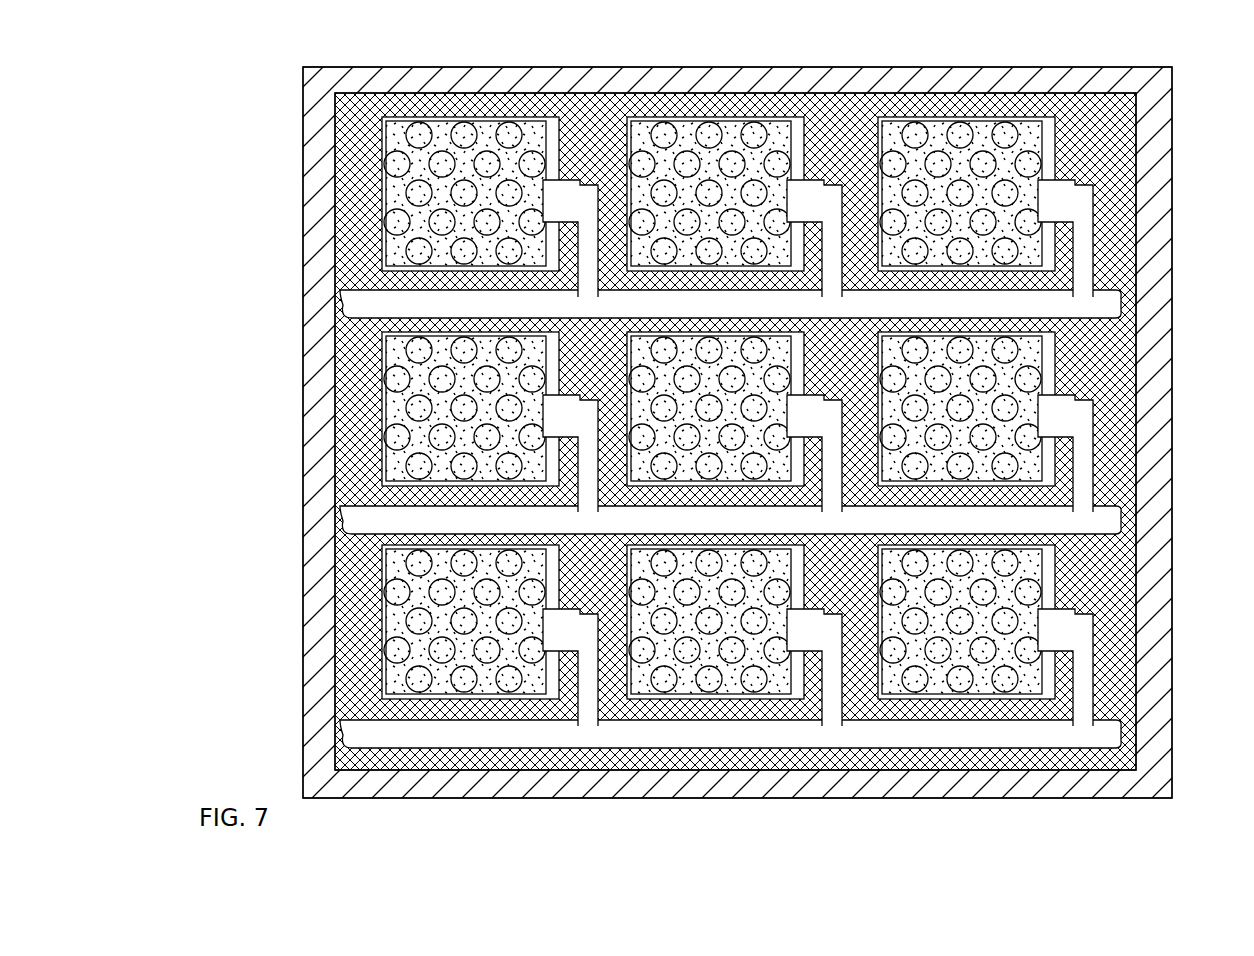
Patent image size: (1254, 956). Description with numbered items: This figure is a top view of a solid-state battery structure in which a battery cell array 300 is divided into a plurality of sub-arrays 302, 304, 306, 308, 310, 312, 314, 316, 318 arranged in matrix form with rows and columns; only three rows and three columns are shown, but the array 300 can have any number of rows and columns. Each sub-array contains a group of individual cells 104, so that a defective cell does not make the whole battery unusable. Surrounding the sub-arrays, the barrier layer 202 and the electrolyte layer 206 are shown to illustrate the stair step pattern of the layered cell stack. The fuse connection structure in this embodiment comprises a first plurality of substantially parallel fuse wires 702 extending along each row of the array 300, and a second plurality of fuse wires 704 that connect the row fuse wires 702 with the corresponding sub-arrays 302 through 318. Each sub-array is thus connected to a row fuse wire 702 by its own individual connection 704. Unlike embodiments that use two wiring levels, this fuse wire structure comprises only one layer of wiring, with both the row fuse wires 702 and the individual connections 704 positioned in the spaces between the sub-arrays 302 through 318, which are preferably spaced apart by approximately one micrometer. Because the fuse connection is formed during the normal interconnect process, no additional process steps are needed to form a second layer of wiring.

The battery cell array 300 is at (275, 93).
The barrier layer 202 is at (1158, 97).
The electrolyte layer 206 is at (1119, 157).
The cells 104 is at (400, 355).
The sub-array 302 is at (980, 690).
The sub-array 304 is at (732, 690).
The sub-array 306 is at (485, 690).
The sub-array 308 is at (1033, 362).
The sub-array 310 is at (785, 358).
The sub-array 312 is at (429, 409).
The sub-array 314 is at (975, 125).
The sub-array 316 is at (725, 122).
The sub-array 318 is at (463, 118).
The first plurality of fuse wires 702 is at (345, 295).
The second plurality of fuse wires 704 is at (594, 189).